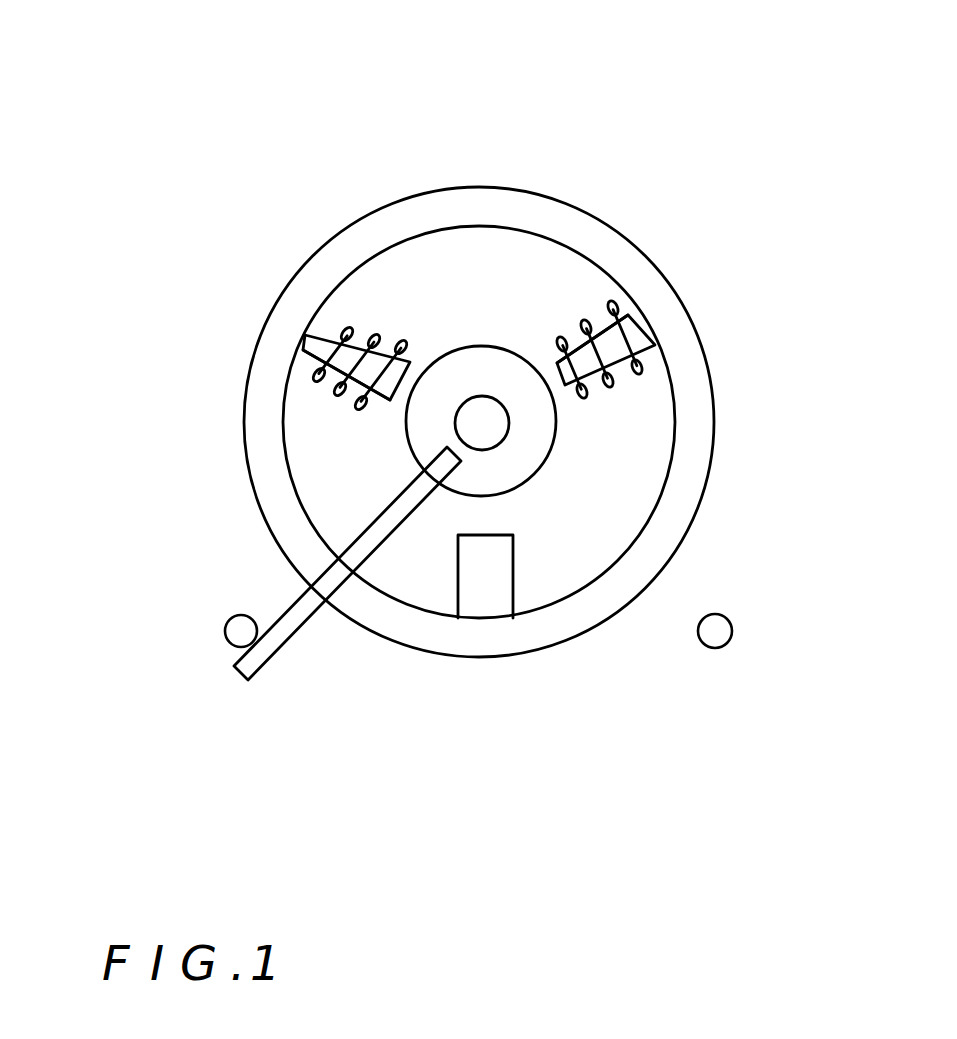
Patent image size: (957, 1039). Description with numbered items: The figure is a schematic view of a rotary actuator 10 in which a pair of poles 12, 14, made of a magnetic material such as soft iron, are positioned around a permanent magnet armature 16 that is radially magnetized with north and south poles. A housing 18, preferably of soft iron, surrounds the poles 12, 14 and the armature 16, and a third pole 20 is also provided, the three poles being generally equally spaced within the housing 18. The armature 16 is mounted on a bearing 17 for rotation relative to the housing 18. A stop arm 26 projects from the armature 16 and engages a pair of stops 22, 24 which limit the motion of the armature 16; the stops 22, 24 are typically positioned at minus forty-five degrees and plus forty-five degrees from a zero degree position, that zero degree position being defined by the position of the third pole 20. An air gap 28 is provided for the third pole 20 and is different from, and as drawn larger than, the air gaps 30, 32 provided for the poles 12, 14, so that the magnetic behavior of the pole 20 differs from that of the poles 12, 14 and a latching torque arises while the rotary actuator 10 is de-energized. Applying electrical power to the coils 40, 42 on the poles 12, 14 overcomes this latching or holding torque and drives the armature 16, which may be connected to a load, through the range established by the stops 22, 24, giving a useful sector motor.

The rotary actuator 10 is at (700, 68).
The pole 12 is at (318, 338).
The pole 14 is at (642, 340).
The armature 16 is at (494, 367).
The bearing 17 is at (470, 423).
The housing 18 is at (688, 362).
The third pole 20 is at (492, 600).
The stop 22 is at (246, 631).
The stop 24 is at (724, 627).
The stop arm 26 is at (267, 660).
The air gap 28 is at (490, 512).
The air gap 30 is at (433, 352).
The air gap 32 is at (560, 397).
The coil 40 is at (333, 380).
The coil 42 is at (625, 290).